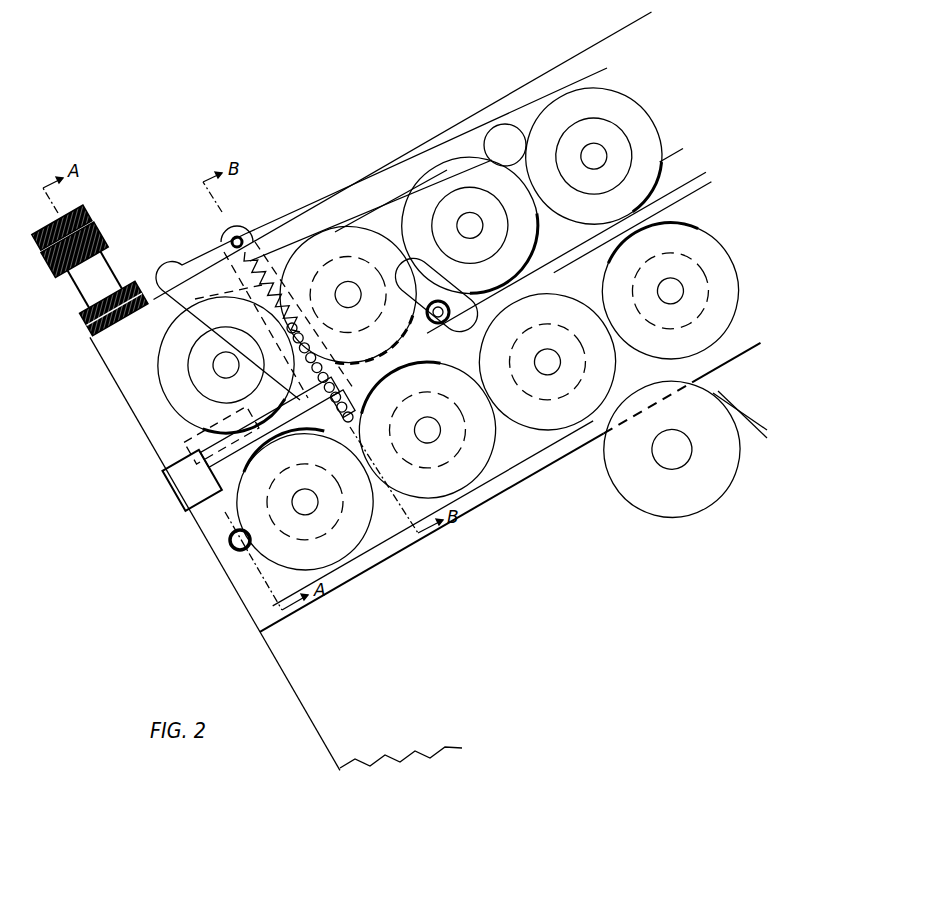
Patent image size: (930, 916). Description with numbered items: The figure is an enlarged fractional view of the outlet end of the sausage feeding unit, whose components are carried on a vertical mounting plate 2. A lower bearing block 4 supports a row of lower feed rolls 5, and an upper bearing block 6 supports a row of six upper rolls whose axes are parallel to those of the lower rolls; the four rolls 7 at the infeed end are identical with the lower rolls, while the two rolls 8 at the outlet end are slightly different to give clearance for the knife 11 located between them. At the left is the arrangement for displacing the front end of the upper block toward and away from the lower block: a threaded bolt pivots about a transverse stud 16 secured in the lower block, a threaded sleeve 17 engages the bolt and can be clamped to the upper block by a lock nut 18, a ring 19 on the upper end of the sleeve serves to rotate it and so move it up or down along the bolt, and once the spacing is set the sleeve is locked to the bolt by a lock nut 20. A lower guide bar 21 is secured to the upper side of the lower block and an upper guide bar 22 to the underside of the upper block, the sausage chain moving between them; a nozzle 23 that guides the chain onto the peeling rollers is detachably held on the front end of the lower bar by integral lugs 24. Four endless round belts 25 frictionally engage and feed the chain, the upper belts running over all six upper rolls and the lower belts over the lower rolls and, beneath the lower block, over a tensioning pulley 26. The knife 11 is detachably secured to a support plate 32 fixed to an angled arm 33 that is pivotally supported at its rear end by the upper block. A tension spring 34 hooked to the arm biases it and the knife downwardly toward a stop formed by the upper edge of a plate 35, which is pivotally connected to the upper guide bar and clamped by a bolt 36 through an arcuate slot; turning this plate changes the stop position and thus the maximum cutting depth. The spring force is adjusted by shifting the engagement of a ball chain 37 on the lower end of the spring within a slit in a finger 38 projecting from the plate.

The vertical mounting plate 2 is at (292, 675).
The lower bearing block 4 is at (728, 360).
The lower feed rolls 5 is at (630, 350).
The upper bearing block 6 is at (523, 96).
The upper feed rolls 7 is at (556, 92).
The front upper feed rolls 8 is at (165, 360).
The knife 11 is at (300, 390).
The transverse stud 16 is at (228, 548).
The threaded sleeve 17 is at (100, 266).
The lock nut 18 is at (135, 300).
The ring 19 is at (100, 238).
The lock nut 20 is at (90, 212).
The lower guide bar 21 is at (476, 354).
The upper guide bar 22 is at (555, 216).
The nozzle 23 is at (170, 480).
The lugs 24 is at (200, 458).
The endless round belts 25 is at (473, 140).
The tensioning pulley 26 is at (652, 505).
The support plate 32 is at (232, 232).
The angled arm 33 is at (338, 210).
The tension spring 34 is at (250, 292).
The plate 35 is at (188, 275).
The bolt 36 is at (447, 303).
The ball chain 37 is at (310, 356).
The finger 38 is at (332, 402).